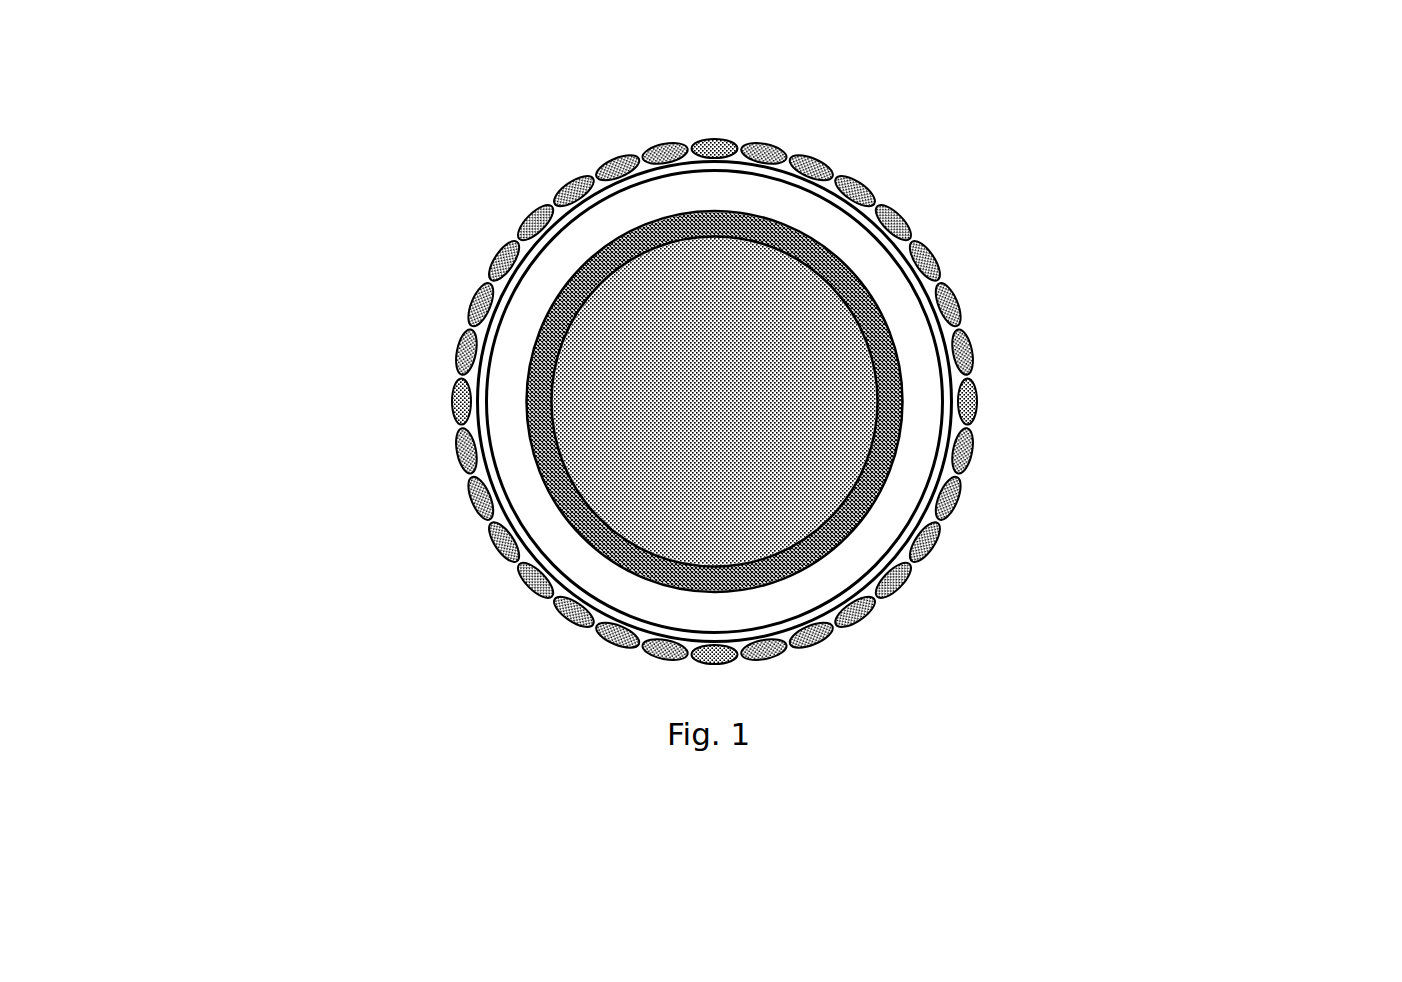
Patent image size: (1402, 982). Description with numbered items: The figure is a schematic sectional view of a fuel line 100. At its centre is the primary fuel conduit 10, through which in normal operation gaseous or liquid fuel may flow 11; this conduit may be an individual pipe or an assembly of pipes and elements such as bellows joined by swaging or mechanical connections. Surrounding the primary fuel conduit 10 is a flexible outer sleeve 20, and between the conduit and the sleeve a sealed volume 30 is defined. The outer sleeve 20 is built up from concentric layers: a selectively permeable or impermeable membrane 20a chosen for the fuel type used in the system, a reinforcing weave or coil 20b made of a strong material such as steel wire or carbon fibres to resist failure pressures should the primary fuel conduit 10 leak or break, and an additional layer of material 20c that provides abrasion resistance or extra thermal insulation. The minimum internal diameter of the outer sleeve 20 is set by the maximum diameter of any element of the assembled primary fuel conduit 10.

The fuel line 100 is at (372, 150).
The primary fuel conduit 10 is at (880, 341).
The fuel flow 11 is at (655, 403).
The sealed volume 30 is at (540, 508).
The flexible outer sleeve 20 is at (1288, 440).
The selectively permeable or impermeable membrane 20a is at (940, 518).
The reinforcing weave or coil 20b is at (913, 545).
The additional layer of material 20c is at (878, 607).